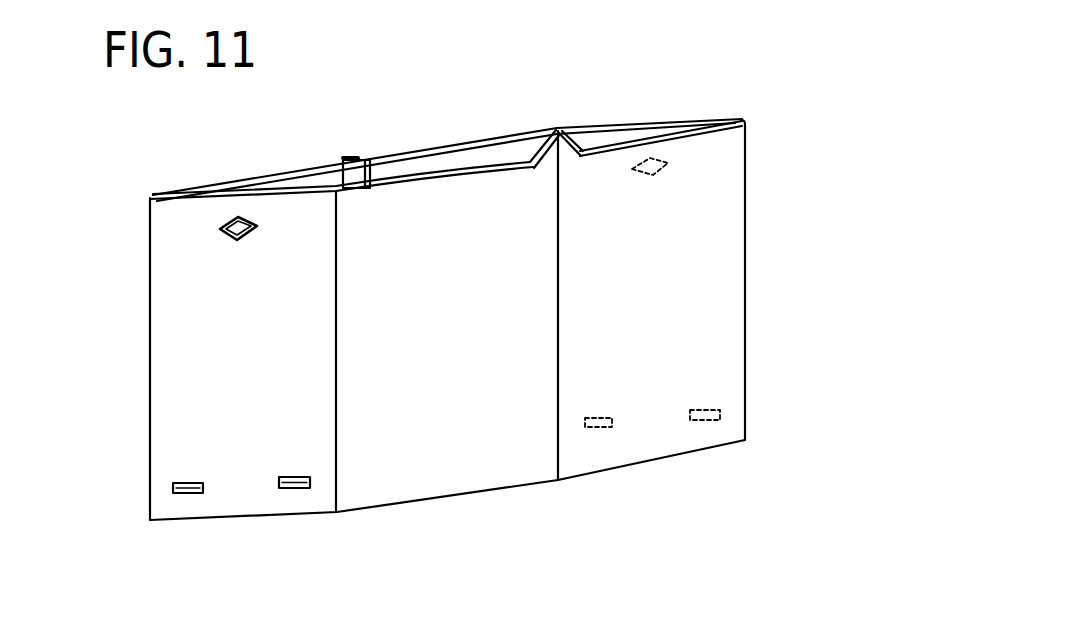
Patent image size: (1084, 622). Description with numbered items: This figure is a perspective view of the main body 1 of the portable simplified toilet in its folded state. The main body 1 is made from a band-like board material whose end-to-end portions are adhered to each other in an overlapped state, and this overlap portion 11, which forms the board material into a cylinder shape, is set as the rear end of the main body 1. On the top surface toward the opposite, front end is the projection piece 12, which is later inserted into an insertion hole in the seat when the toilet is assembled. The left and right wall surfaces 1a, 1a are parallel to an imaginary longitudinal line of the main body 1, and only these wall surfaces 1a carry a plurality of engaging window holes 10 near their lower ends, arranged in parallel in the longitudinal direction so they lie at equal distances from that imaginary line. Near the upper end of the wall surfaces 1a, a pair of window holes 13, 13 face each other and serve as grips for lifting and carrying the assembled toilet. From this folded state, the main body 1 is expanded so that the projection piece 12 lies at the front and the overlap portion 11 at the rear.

The main body 1 is at (483, 128).
The left and right wall surfaces 1a is at (637, 133).
The engaging window hole 10 is at (188, 494).
The overlap portion 11 is at (353, 157).
The projection piece 12 is at (560, 152).
The window hole 13 is at (229, 218).